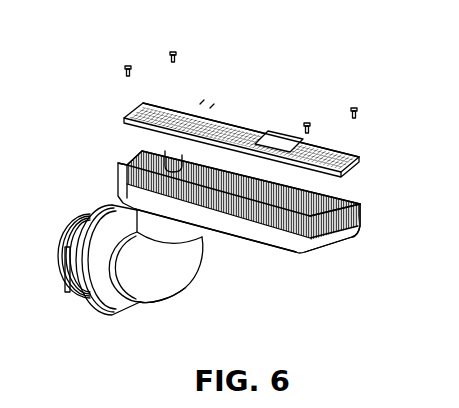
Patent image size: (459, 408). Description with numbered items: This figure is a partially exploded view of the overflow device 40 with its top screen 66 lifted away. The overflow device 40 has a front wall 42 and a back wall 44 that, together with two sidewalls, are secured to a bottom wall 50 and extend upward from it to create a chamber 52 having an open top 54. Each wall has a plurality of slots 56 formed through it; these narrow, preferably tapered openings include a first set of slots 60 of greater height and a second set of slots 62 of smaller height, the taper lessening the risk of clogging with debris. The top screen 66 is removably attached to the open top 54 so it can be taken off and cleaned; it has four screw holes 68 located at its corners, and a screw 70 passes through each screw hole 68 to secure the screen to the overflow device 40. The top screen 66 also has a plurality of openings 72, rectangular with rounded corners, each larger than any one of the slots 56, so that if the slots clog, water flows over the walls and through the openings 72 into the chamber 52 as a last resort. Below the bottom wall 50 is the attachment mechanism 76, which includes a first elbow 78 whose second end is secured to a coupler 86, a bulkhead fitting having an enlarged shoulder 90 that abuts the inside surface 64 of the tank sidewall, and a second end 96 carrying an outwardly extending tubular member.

The overflow device 40 is at (307, 62).
The front wall 42 is at (360, 222).
The back wall 44 is at (124, 165).
The bottom wall 50 is at (290, 255).
The chamber 52 is at (372, 186).
The open top 54 is at (350, 195).
The plurality of slots 56 is at (315, 180).
The first set of slots 60 is at (336, 248).
The second set of slots 62 is at (136, 156).
The inside surface 64 is at (130, 116).
The top screen 66 is at (236, 108).
The screw holes 68 is at (176, 100).
The screw 70 is at (128, 65).
The plurality of openings 72 is at (210, 106).
The attachment mechanism 76 is at (181, 312).
The first elbow 78 is at (181, 286).
The coupler 86 is at (76, 196).
The enlarged shoulder 90 is at (110, 308).
The second end 96 is at (68, 232).